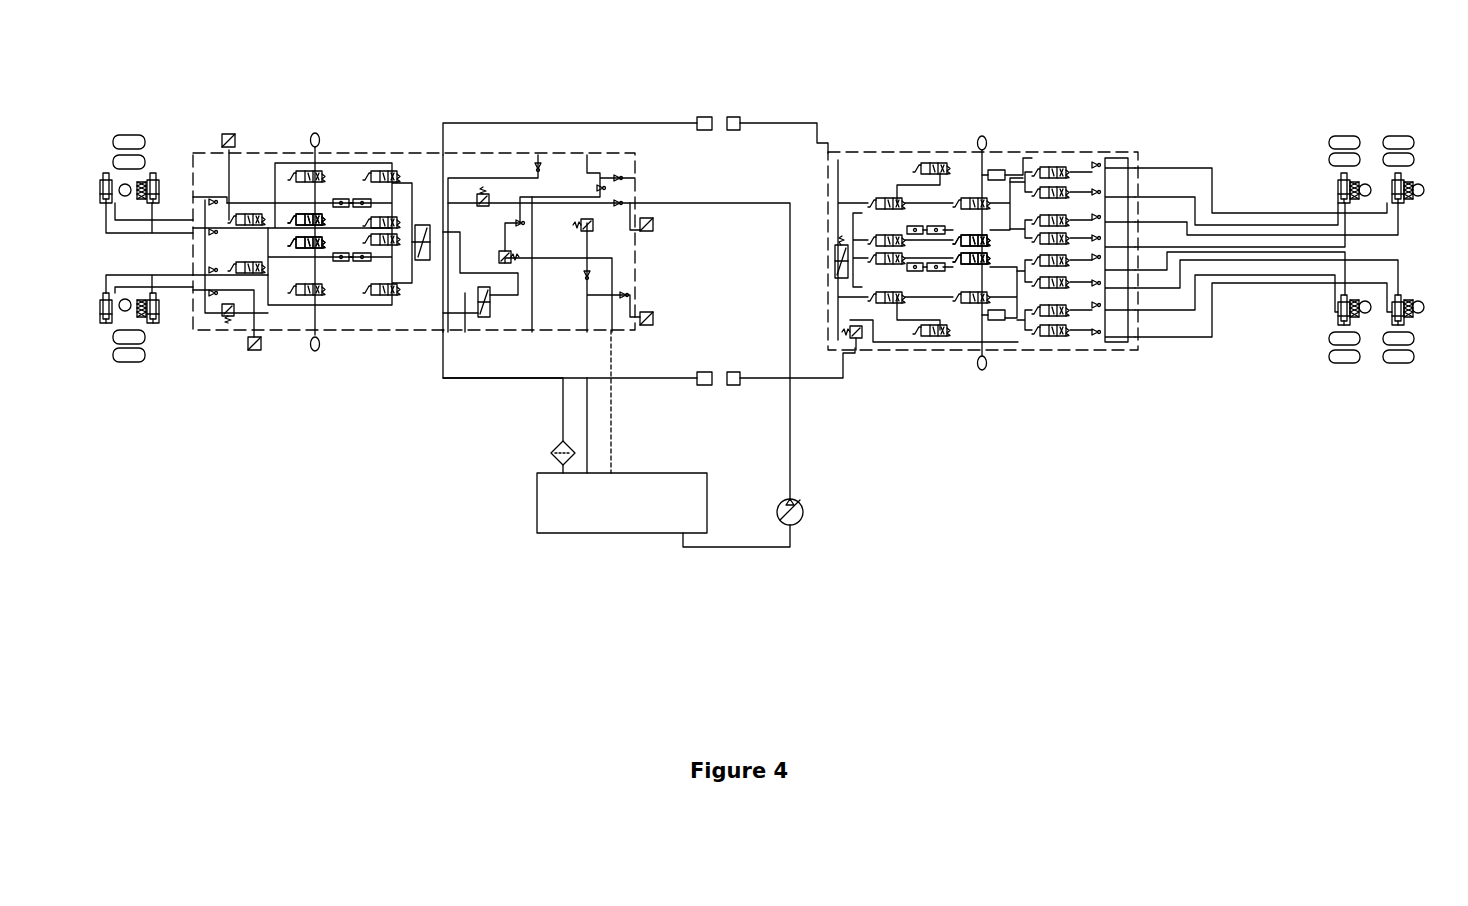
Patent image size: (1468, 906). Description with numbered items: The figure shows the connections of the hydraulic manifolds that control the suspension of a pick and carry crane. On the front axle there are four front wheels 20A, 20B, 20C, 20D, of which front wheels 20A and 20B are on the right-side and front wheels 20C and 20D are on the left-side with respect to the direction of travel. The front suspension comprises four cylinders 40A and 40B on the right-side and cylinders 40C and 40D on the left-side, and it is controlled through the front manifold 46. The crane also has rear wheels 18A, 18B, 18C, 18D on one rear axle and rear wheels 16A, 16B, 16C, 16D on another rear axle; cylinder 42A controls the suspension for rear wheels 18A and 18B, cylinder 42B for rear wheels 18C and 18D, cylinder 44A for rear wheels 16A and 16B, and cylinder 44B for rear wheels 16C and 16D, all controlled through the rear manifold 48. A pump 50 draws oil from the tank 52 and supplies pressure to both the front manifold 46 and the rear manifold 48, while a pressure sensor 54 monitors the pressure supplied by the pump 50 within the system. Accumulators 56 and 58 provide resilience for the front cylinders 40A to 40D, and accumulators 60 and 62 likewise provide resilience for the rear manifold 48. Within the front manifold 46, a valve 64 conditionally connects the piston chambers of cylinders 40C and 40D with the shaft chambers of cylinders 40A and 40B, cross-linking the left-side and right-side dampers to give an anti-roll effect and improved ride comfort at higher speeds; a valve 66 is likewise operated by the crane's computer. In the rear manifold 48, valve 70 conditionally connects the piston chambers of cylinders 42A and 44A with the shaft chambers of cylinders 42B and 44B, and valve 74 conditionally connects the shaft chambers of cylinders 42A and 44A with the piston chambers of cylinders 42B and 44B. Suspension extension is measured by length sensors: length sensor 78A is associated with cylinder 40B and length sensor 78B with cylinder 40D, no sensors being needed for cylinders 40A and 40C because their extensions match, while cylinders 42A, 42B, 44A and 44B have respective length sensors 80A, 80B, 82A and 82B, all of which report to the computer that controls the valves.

The rear wheel 16A is at (1385, 142).
The rear wheel 16B is at (1413, 162).
The rear wheel 16C is at (1405, 364).
The rear wheel 16D is at (1387, 356).
The rear wheel 18A is at (1345, 142).
The rear wheel 18B is at (1335, 162).
The rear wheel 18C is at (1330, 338).
The rear wheel 18D is at (1330, 356).
The front wheel 20A is at (140, 140).
The front wheel 20B is at (142, 160).
The front wheel 20C is at (135, 338).
The front wheel 20D is at (137, 358).
The cylinder 40A is at (103, 187).
The cylinder 40B is at (162, 173).
The cylinder 40C is at (102, 322).
The cylinder 40D is at (162, 320).
The cylinder 42A is at (1333, 190).
The cylinder 42B is at (1333, 308).
The cylinder 44A is at (1407, 173).
The cylinder 44B is at (1400, 318).
The front manifold 46 is at (377, 153).
The rear manifold 48 is at (1045, 153).
The pump 50 is at (798, 518).
The tank 52 is at (648, 478).
The pressure sensor 54 is at (657, 225).
The accumulator 56 is at (318, 133).
The accumulator 58 is at (315, 352).
The accumulator 60 is at (982, 136).
The accumulator 62 is at (982, 370).
The valve 64 is at (313, 247).
The valve 66 is at (293, 214).
The valve 70 is at (957, 235).
The valve 74 is at (967, 265).
The length sensor 78A is at (157, 190).
The length sensor 78B is at (140, 318).
The length sensor 80A is at (1357, 183).
The length sensor 80B is at (1356, 316).
The length sensor 82A is at (1410, 198).
The length sensor 82B is at (1410, 295).